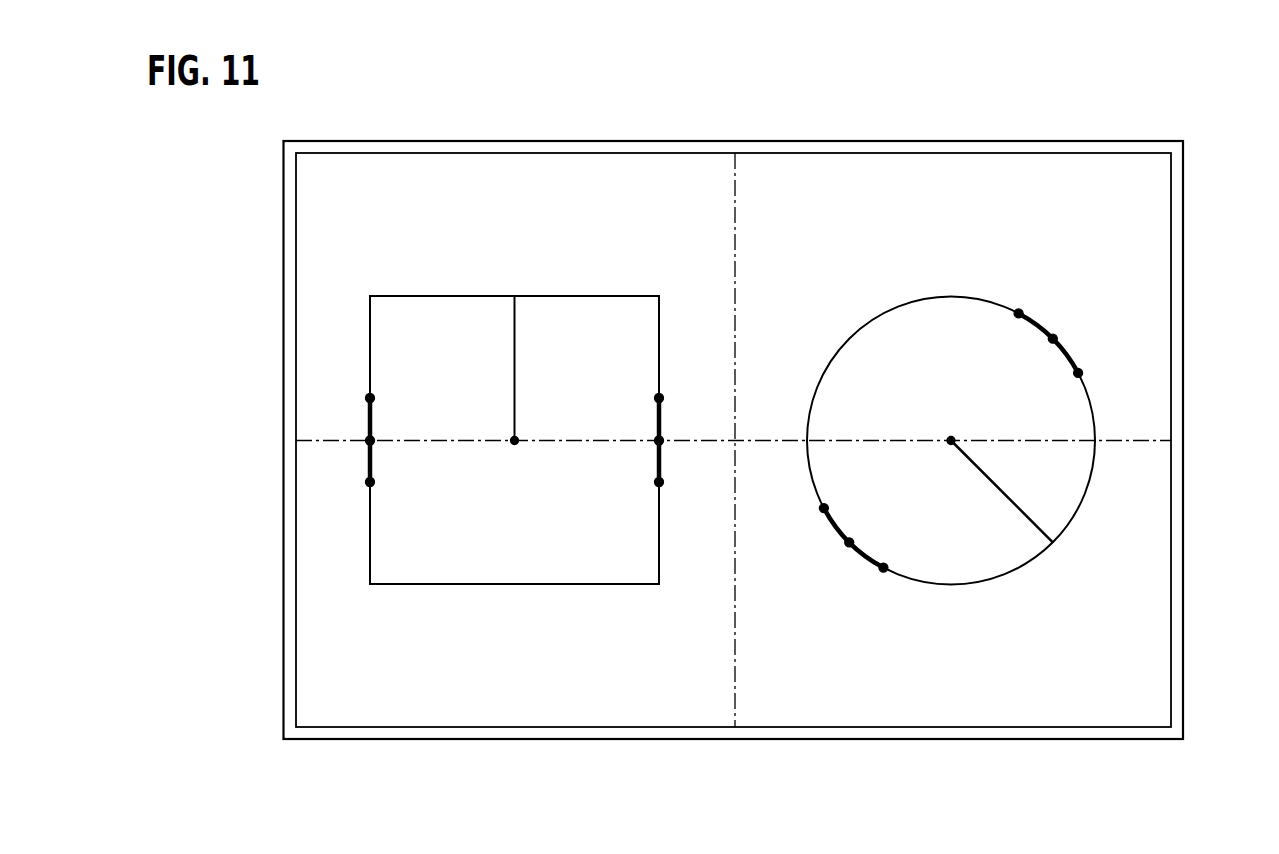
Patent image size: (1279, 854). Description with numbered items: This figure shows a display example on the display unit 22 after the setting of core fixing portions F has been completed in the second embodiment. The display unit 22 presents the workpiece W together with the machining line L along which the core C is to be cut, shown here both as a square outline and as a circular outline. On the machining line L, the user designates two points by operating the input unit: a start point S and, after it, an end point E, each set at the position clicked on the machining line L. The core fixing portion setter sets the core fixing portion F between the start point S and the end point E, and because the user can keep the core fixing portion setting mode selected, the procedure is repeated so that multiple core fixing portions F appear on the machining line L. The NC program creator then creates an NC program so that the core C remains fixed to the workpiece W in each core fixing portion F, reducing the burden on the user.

The display unit 22 is at (1184, 272).
The workpiece W is at (1140, 537).
The core C is at (410, 338).
The machining line L is at (553, 296).
The end point E is at (368, 397).
The core fixing portion F is at (368, 462).
The start point S is at (368, 483).